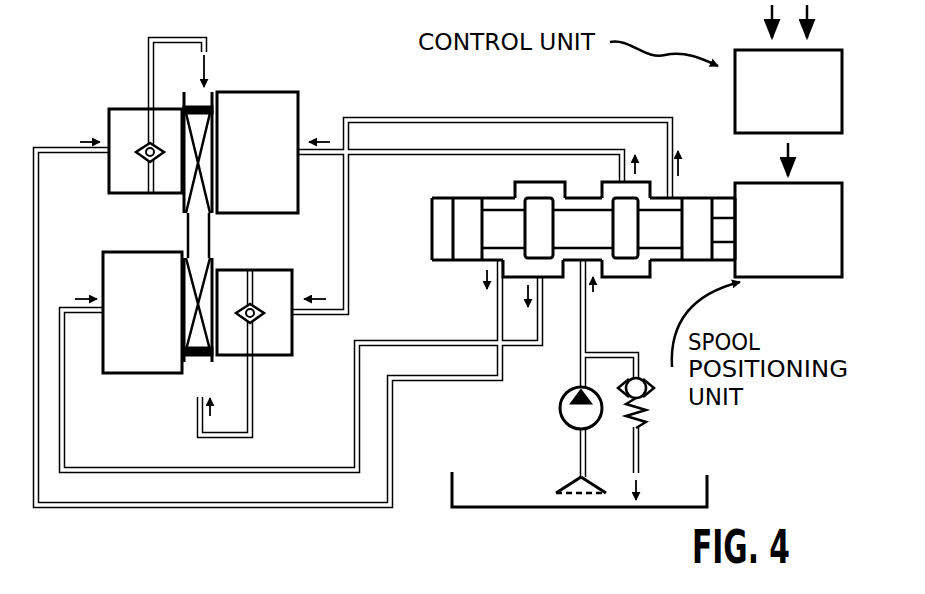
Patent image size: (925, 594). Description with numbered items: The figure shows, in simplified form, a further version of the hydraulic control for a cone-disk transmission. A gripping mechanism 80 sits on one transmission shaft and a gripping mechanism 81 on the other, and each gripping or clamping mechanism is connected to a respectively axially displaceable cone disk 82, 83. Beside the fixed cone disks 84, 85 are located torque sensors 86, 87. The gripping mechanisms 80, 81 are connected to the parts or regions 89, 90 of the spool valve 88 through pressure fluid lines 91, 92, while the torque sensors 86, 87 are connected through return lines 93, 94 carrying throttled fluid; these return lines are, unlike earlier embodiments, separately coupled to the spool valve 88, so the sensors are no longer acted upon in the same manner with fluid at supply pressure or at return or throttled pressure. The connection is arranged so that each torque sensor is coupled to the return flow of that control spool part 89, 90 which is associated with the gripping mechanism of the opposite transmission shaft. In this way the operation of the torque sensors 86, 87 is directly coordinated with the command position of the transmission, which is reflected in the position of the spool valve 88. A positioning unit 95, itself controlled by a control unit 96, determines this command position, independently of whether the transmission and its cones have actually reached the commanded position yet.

The gripping mechanism 80 is at (286, 118).
The gripping mechanism 81 is at (122, 360).
The axially displaceable cone disk 82 is at (214, 145).
The axially displaceable cone disk 83 is at (185, 323).
The fixed cone disk 84 is at (183, 120).
The fixed cone disk 85 is at (210, 323).
The torque sensor 86 is at (120, 118).
The torque sensor 87 is at (277, 343).
The spool valve 88 is at (583, 202).
The control spool part 89 is at (538, 208).
The control spool part 90 is at (623, 254).
The pressure fluid line 91 is at (227, 473).
The pressure fluid line 92 is at (607, 150).
The return line 93 is at (392, 403).
The return line 94 is at (372, 118).
The positioning unit 95 is at (793, 275).
The control unit 96 is at (755, 92).